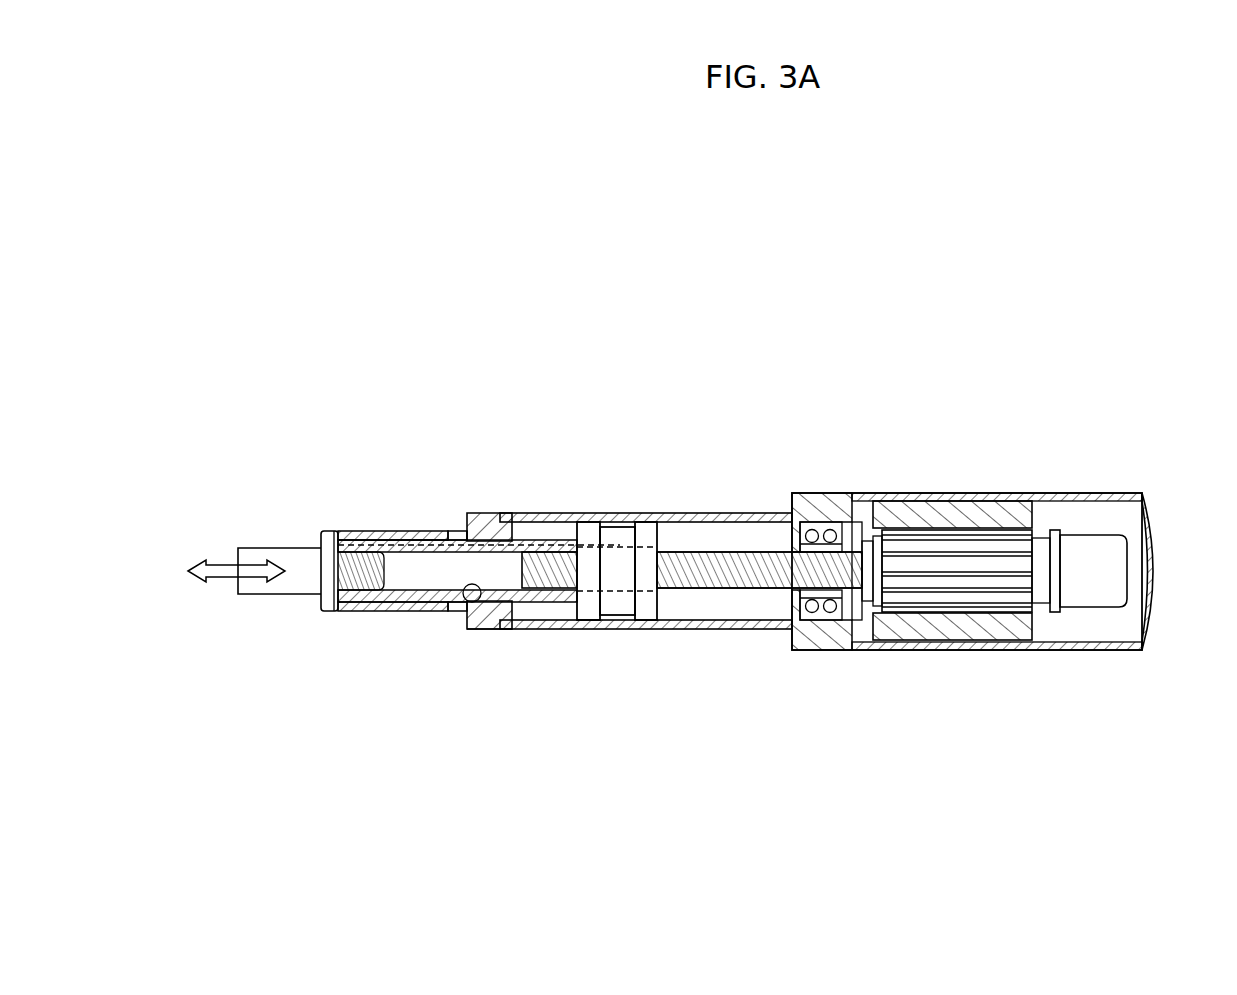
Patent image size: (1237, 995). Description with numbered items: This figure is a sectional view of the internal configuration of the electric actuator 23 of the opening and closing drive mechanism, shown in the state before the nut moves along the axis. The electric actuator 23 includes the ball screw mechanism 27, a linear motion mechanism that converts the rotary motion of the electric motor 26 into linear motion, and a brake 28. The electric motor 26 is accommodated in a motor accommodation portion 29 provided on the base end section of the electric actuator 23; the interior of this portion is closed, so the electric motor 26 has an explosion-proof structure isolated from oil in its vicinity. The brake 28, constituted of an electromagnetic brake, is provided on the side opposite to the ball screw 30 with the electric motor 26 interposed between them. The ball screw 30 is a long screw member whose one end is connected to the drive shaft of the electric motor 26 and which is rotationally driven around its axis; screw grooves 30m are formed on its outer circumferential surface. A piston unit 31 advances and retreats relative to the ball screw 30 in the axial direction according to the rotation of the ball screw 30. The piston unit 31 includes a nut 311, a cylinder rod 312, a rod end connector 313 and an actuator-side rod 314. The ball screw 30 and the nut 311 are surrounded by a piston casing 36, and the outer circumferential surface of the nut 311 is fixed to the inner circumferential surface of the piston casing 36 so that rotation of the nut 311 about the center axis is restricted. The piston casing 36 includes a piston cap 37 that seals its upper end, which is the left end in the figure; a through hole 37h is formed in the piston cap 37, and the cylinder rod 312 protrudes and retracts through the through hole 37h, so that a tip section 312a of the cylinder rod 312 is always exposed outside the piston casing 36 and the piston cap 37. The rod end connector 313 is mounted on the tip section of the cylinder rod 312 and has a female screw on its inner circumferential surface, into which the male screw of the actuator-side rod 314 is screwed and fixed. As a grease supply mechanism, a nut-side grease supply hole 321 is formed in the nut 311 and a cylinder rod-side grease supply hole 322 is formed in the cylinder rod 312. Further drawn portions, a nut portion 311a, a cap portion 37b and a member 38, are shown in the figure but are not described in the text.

The electric actuator 23 is at (841, 466).
The electric motor 26 is at (955, 535).
The ball screw mechanism 27 is at (708, 538).
The brake 28 is at (1088, 535).
The motor accommodation portion 29 is at (962, 650).
The ball screw 30 is at (765, 592).
The female screw grooves 30m is at (762, 558).
The piston unit 31 is at (616, 516).
The nut 311 is at (625, 610).
The end face of nut body 311a is at (576, 613).
The cylinder rod 312 is at (556, 518).
The tip section of cylinder rod 312a is at (407, 541).
The rod end connector 313 is at (392, 578).
The actuator-side rod 314 is at (281, 548).
The nut-side grease supply hole 321 is at (594, 546).
The cylinder rod-side grease supply hole 322 is at (487, 541).
The piston casing 36 is at (521, 515).
The piston cap 37 is at (470, 514).
The bottom surface of flange 37b is at (527, 612).
The through hole 37h is at (461, 601).
The lock nut 38 is at (347, 531).